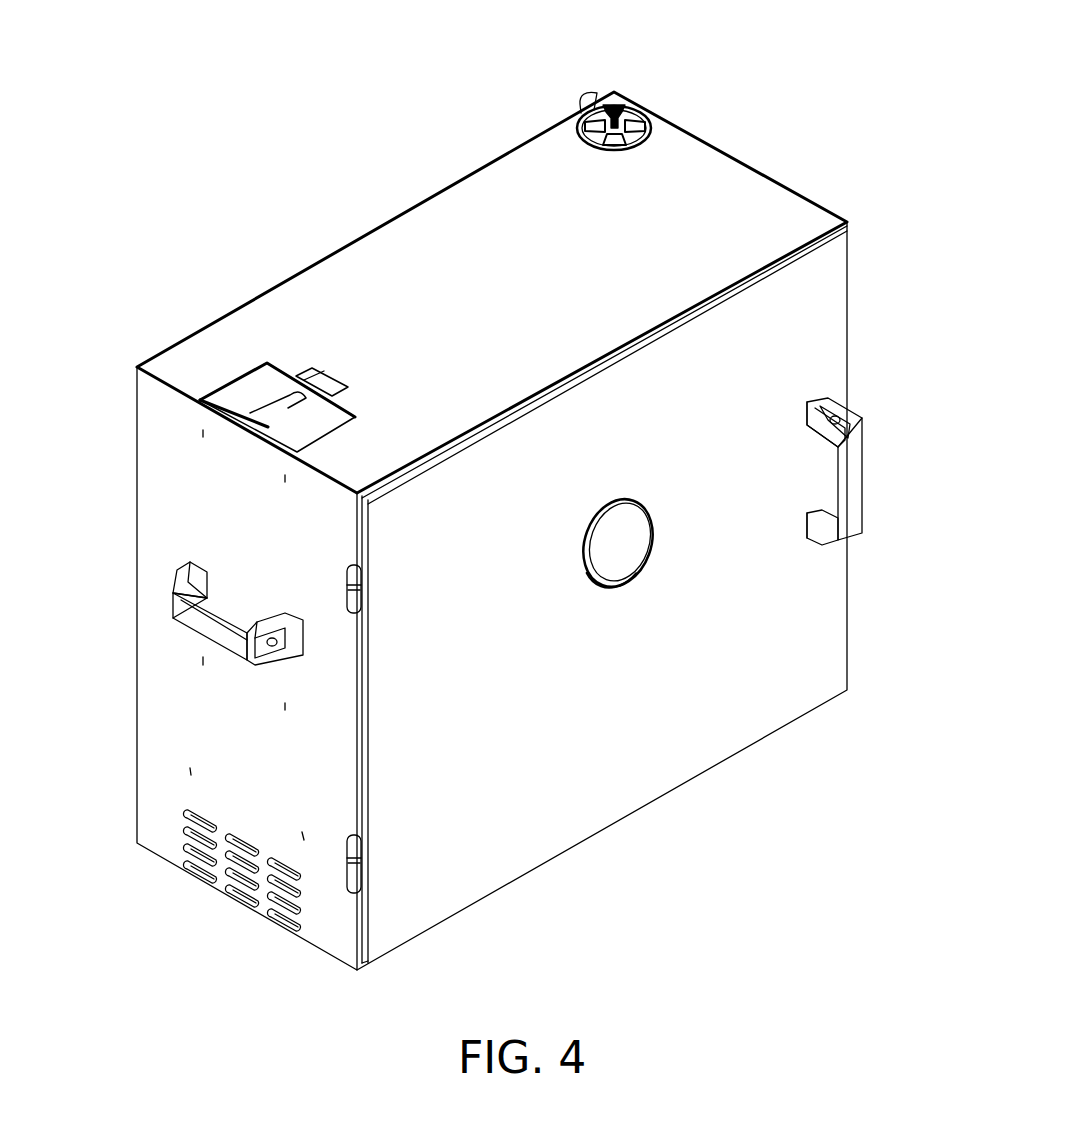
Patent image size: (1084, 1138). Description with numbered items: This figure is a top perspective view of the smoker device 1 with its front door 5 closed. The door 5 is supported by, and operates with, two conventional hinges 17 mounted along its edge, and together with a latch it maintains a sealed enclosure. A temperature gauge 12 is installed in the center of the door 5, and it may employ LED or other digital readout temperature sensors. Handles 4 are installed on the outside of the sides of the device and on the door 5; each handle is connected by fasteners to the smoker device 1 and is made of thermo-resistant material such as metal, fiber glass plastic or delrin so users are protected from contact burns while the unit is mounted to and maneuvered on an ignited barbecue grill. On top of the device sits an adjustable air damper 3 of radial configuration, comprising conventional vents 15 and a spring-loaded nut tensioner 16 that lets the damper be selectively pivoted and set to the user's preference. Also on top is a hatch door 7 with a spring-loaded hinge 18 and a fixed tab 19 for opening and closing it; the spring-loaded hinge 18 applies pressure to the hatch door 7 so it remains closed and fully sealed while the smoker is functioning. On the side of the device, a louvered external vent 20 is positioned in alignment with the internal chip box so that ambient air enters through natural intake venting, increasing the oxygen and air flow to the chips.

The smoker device 1 is at (492, 292).
The adjustable air damper 3 is at (650, 72).
The handles 4 is at (505, 550).
The door 5 is at (651, 596).
The hatch door 7 is at (258, 353).
The temperature gauge 12 is at (644, 562).
The vents 15 is at (651, 104).
The spring-loaded nut tensioner 16 is at (564, 70).
The hinges 17 is at (407, 716).
The spring-loaded hinge 18 is at (274, 310).
The fixed tab 19 is at (201, 384).
The external vent (louver) 20 is at (210, 885).